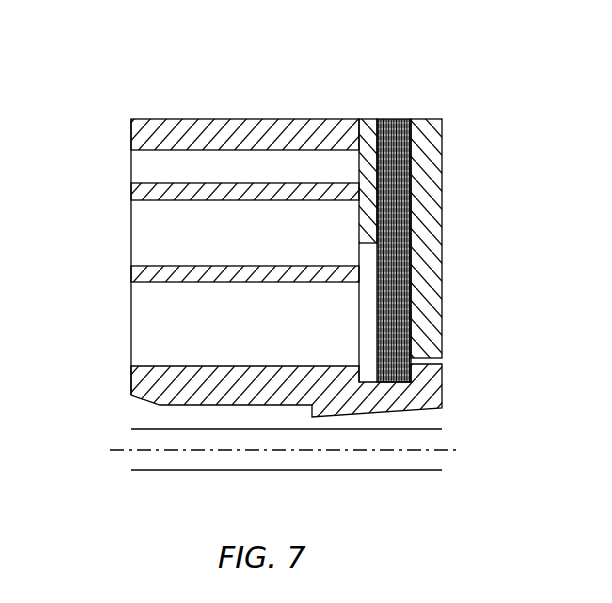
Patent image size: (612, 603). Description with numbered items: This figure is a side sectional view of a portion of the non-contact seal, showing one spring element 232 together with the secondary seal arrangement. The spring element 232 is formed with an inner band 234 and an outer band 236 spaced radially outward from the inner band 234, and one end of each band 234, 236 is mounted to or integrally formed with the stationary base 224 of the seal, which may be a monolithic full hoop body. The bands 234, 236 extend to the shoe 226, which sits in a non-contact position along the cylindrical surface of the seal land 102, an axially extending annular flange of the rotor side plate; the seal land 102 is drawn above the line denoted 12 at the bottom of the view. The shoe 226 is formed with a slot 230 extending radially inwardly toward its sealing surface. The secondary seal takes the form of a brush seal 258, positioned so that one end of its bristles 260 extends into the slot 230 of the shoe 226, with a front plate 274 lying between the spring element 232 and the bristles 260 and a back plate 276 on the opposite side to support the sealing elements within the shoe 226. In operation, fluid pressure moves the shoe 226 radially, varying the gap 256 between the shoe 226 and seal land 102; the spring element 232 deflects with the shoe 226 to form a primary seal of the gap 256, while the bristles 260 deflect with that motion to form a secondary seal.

The spring element 232 is at (115, 80).
The stationary base 224 is at (262, 119).
The outer band 236 is at (131, 191).
The inner band 234 is at (131, 272).
The shoe 226 is at (131, 376).
The slot 230 is at (442, 386).
The brush seal 258 is at (398, 108).
The front plate 274 is at (366, 119).
The bristles 260 is at (413, 296).
The back plate 276 is at (442, 217).
The gap 256 is at (418, 420).
The tissue / skin line 12 is at (115, 450).
The seal land 102 is at (417, 470).